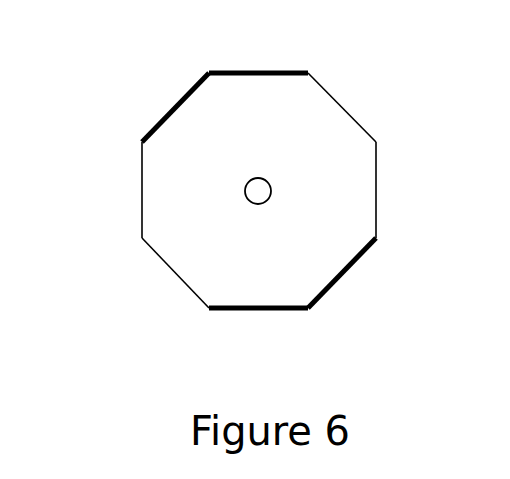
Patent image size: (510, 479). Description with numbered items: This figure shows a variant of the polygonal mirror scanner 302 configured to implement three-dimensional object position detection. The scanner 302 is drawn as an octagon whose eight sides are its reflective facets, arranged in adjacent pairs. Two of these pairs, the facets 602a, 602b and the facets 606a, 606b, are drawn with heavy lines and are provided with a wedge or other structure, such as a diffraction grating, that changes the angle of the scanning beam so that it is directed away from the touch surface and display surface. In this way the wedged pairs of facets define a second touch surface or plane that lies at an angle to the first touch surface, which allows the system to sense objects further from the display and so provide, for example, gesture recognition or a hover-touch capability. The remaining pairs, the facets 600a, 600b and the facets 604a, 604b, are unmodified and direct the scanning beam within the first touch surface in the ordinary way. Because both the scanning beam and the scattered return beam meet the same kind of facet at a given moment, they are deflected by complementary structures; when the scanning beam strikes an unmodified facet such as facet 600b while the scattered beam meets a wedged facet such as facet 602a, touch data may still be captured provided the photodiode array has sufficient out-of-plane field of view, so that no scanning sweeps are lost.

The scanner 302 is at (247, 193).
The facet 600a is at (335, 97).
The facet 600b is at (376, 192).
The facet 602a is at (347, 272).
The facet 602b is at (277, 310).
The facet 604a is at (172, 273).
The facet 604b is at (142, 185).
The facet 606a is at (160, 110).
The facet 606b is at (288, 72).